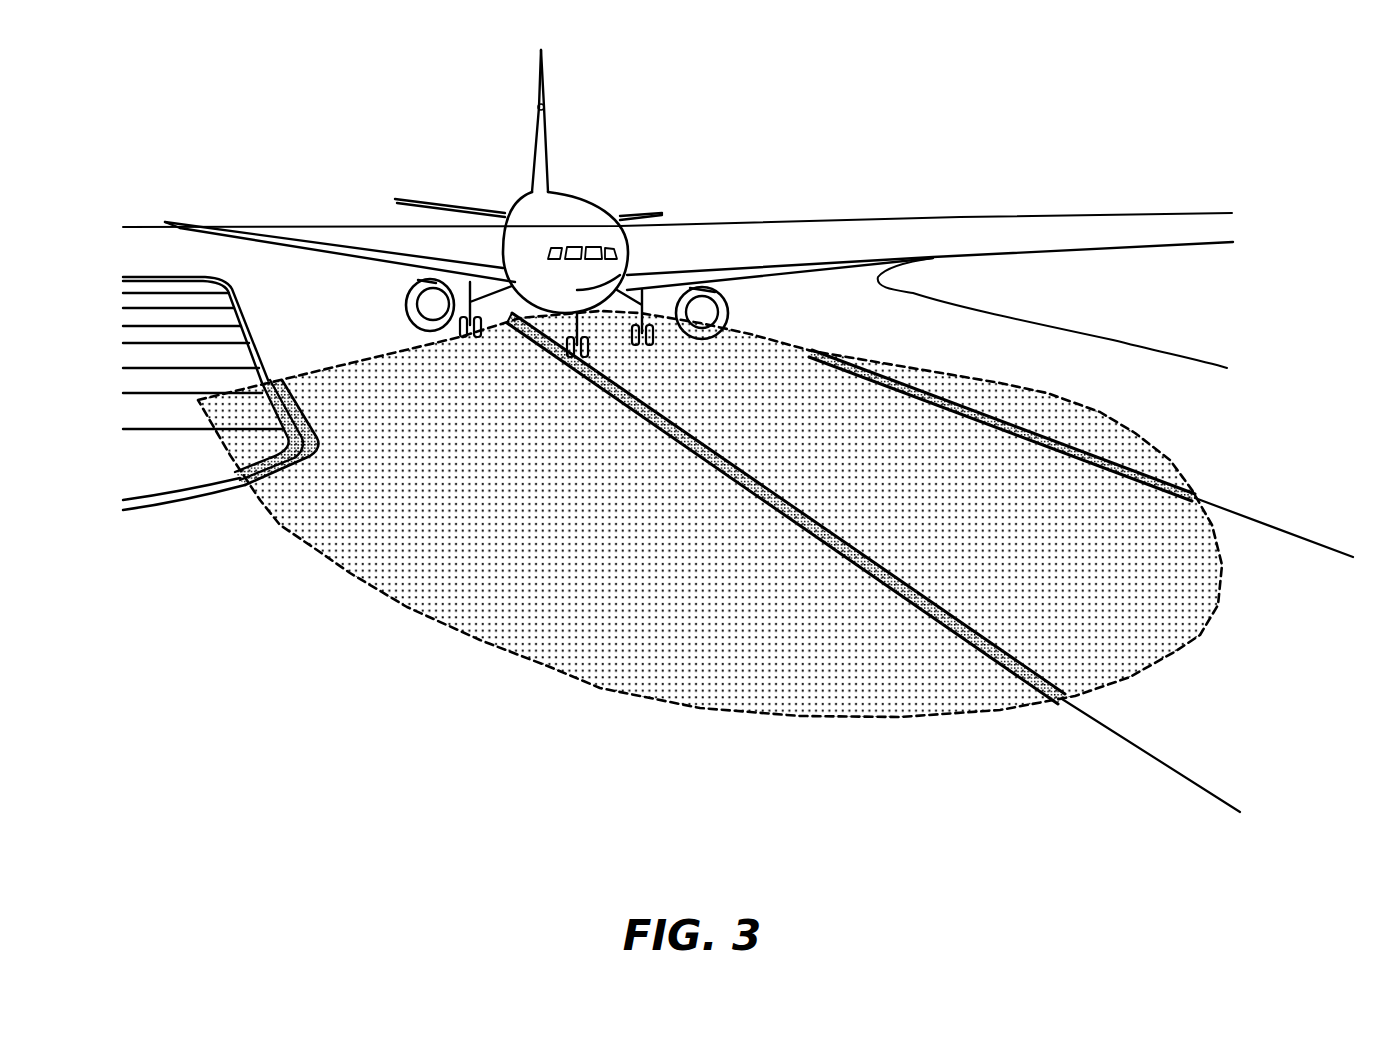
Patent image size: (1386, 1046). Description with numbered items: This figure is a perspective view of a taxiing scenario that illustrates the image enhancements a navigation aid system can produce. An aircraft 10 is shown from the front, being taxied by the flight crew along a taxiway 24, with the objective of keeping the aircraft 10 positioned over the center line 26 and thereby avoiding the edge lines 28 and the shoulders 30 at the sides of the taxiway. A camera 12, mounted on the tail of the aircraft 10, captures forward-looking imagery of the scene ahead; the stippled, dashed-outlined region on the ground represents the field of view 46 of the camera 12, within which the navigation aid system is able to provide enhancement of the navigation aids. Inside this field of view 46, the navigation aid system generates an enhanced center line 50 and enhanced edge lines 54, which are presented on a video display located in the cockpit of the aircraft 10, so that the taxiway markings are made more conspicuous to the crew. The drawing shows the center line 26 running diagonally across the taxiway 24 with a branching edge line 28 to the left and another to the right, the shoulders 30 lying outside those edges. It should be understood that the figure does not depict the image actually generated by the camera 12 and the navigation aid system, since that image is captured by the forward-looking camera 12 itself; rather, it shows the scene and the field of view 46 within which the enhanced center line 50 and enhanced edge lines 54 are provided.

The aircraft 10 is at (567, 218).
The camera 12 is at (544, 108).
The taxiway 24 is at (960, 483).
The center line 26 is at (1168, 766).
The edge line 28 is at (263, 325).
The shoulder 30 is at (170, 397).
The field of view 46 is at (755, 611).
The enhanced center line 50 is at (985, 634).
The enhanced edge line 54 is at (303, 462).